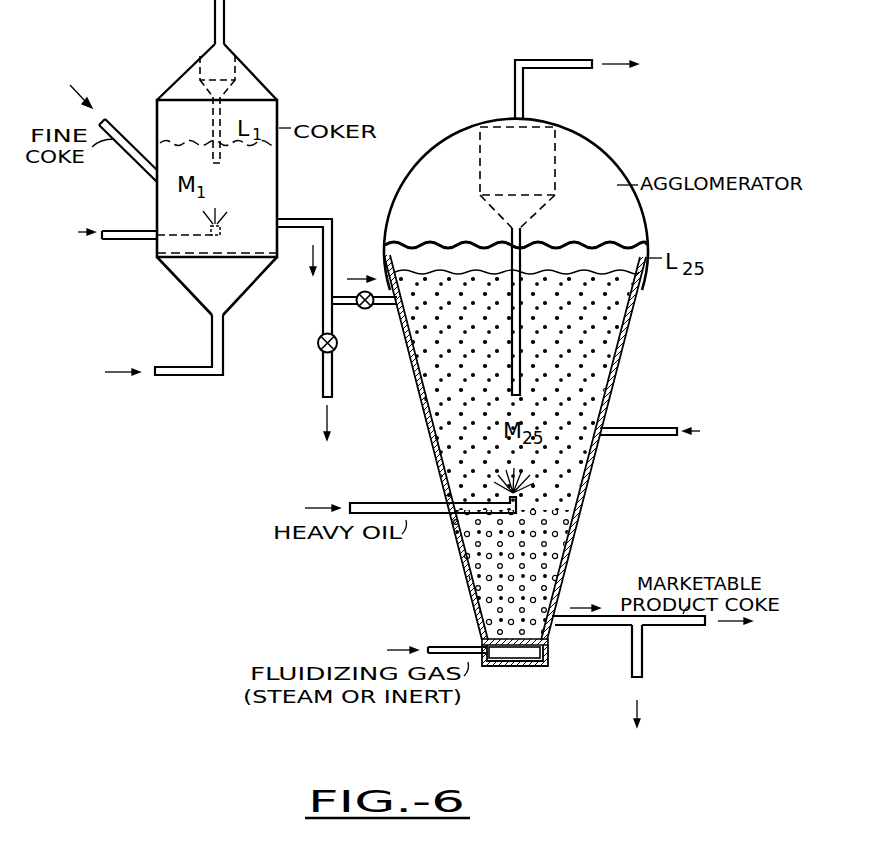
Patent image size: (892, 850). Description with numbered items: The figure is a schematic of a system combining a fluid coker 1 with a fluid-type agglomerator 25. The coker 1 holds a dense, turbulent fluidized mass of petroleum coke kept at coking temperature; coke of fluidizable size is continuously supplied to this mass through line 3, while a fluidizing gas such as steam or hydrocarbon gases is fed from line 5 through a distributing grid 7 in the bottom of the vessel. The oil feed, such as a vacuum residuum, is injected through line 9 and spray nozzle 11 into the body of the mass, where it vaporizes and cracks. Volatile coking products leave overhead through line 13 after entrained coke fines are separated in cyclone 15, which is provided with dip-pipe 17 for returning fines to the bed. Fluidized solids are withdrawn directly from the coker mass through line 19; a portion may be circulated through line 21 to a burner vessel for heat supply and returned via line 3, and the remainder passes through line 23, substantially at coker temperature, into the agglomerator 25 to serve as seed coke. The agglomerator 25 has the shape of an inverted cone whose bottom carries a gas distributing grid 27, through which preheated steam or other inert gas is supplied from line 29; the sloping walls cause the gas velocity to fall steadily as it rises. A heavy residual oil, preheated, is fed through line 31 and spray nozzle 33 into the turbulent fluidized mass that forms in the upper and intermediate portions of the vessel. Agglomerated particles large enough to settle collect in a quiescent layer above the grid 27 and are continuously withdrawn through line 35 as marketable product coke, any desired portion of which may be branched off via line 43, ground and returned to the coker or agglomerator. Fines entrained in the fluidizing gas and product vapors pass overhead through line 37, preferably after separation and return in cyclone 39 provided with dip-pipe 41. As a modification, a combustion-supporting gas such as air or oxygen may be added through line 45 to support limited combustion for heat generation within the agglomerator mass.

The fluid coker 1 is at (279, 175).
The line 3 is at (112, 128).
The line 5 is at (180, 379).
The grid 7 is at (177, 268).
The line 9 is at (109, 243).
The spray nozzle 11 is at (228, 205).
The line 13 is at (225, 6).
The cyclone 15 is at (196, 70).
The dip-pipe 17 is at (213, 125).
The line 19 is at (333, 234).
The line 21 is at (322, 380).
The line 23 is at (380, 306).
The fluid-type agglomerator 25 is at (632, 334).
The gas distributing grid 27 is at (548, 652).
The line 29 is at (455, 646).
The line 31 is at (385, 502).
The spray nozzle 33 is at (522, 497).
The line 35 is at (684, 630).
The line 37 is at (562, 48).
The cyclone 39 is at (480, 168).
The dip-pipe 41 is at (521, 351).
The line 43 is at (643, 672).
The line 45 is at (676, 438).